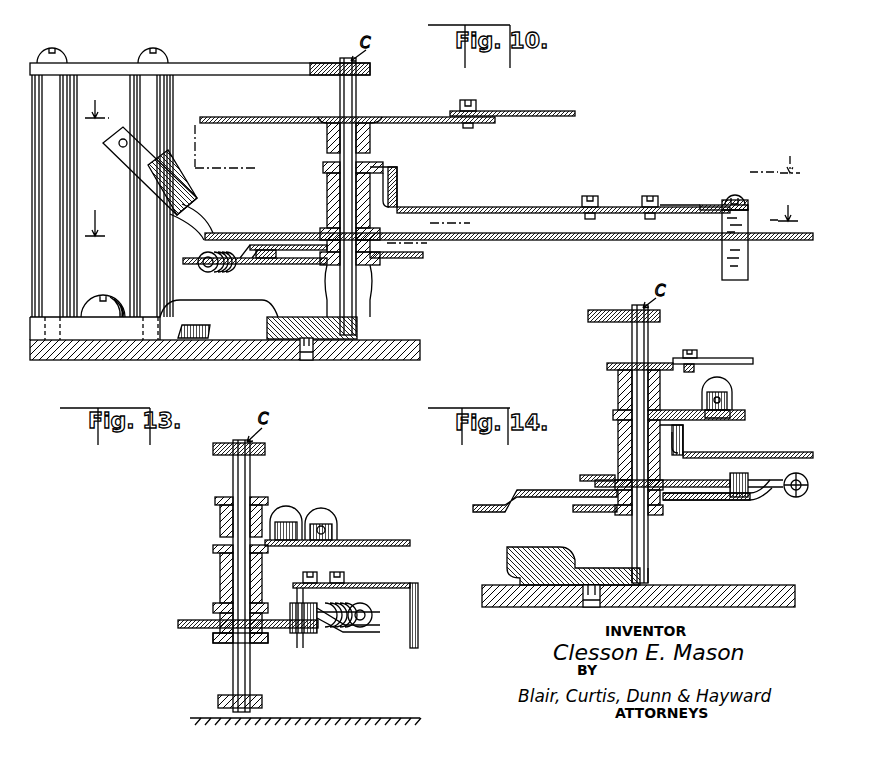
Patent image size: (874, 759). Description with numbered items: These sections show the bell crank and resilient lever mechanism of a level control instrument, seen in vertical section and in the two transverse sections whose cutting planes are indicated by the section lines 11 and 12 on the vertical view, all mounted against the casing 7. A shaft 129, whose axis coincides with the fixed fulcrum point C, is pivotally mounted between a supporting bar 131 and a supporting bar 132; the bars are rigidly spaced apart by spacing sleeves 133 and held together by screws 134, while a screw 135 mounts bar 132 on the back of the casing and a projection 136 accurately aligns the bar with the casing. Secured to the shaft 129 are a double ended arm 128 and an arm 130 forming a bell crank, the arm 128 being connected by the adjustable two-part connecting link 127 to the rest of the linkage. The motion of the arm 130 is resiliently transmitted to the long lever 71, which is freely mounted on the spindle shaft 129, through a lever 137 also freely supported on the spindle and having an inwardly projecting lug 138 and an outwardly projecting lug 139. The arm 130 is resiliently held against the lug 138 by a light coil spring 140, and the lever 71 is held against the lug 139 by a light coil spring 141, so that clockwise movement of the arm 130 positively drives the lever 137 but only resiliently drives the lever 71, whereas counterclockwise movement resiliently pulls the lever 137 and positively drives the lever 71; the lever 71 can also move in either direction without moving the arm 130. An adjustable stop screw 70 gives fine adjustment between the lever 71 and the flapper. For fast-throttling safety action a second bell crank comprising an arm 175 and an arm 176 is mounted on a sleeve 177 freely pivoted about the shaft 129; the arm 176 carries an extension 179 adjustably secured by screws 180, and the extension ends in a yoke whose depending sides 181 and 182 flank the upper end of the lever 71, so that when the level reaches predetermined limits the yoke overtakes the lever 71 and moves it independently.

In FIG. 10, the base plate 7 is at (212, 364).
In FIG. 13, the base plate 7 is at (382, 713).
In FIG. 14, the base plate 7 is at (735, 585).
In FIG. 10, the section line 11- 11 is at (451, 215).
In FIG. 10, the section line 12- 12 is at (452, 133).
In FIG. 10, the adjustable stop screw 70 is at (112, 152).
In FIG. 10, the long lever 71 is at (190, 200).
In FIG. 14, the long lever 71 is at (700, 480).
In FIG. 10, the connecting link 127 is at (518, 111).
In FIG. 14, the connecting link 127 is at (736, 358).
In FIG. 10, the double ended arm 128 is at (410, 117).
In FIG. 14, the double ended arm 128 is at (657, 363).
In FIG. 10, the shaft 129 is at (340, 97).
In FIG. 13, the shaft 129 is at (233, 475).
In FIG. 14, the shaft 129 is at (632, 345).
In FIG. 10, the arm 130 is at (284, 252).
In FIG. 13, the arm 130 is at (213, 640).
In FIG. 14, the arm 130 is at (586, 510).
In FIG. 10, the supporting bar 131 is at (253, 63).
In FIG. 13, the supporting bar 131 is at (267, 449).
In FIG. 14, the supporting bar 131 is at (606, 310).
In FIG. 10, the supporting bar 132 is at (266, 312).
In FIG. 13, the supporting bar 132 is at (264, 701).
In FIG. 14, the supporting bar 132 is at (507, 555).
In FIG. 10, the spacing sleeves 133 is at (155, 92).
In FIG. 10, the screws 134 is at (66, 50).
In FIG. 10, the screw 135 is at (101, 297).
In FIG. 10, the projection 136 is at (310, 360).
In FIG. 14, the projection 136 is at (590, 607).
In FIG. 10, the lever 137 is at (398, 258).
In FIG. 13, the lever 137 is at (275, 630).
In FIG. 14, the lever 137 is at (540, 490).
In FIG. 10, the inwardly projecting lug 138 is at (250, 265).
In FIG. 13, the outwardly projecting lug 139 is at (330, 632).
In FIG. 14, the outwardly projecting lug 139 is at (742, 475).
In FIG. 10, the light coil spring 140 is at (213, 273).
In FIG. 13, the light coil spring 141 is at (372, 627).
In FIG. 14, the light coil spring 141 is at (793, 498).
In FIG. 13, the arm 175 is at (303, 523).
In FIG. 14, the arm 175 is at (738, 412).
In FIG. 10, the arm 176 is at (462, 207).
In FIG. 13, the arm 176 is at (284, 583).
In FIG. 14, the arm 176 is at (725, 452).
In FIG. 10, the sleeve 177 is at (327, 193).
In FIG. 13, the sleeve 177 is at (220, 575).
In FIG. 14, the sleeve 177 is at (618, 449).
In FIG. 10, the extension 179 is at (712, 205).
In FIG. 13, the extension 179 is at (400, 583).
In FIG. 10, the screws 180 is at (648, 196).
In FIG. 13, the screws 180 is at (322, 578).
In FIG. 10, the depending side 181 is at (722, 268).
In FIG. 13, the depending side 181 is at (299, 648).
In FIG. 13, the depending side 182 is at (416, 646).